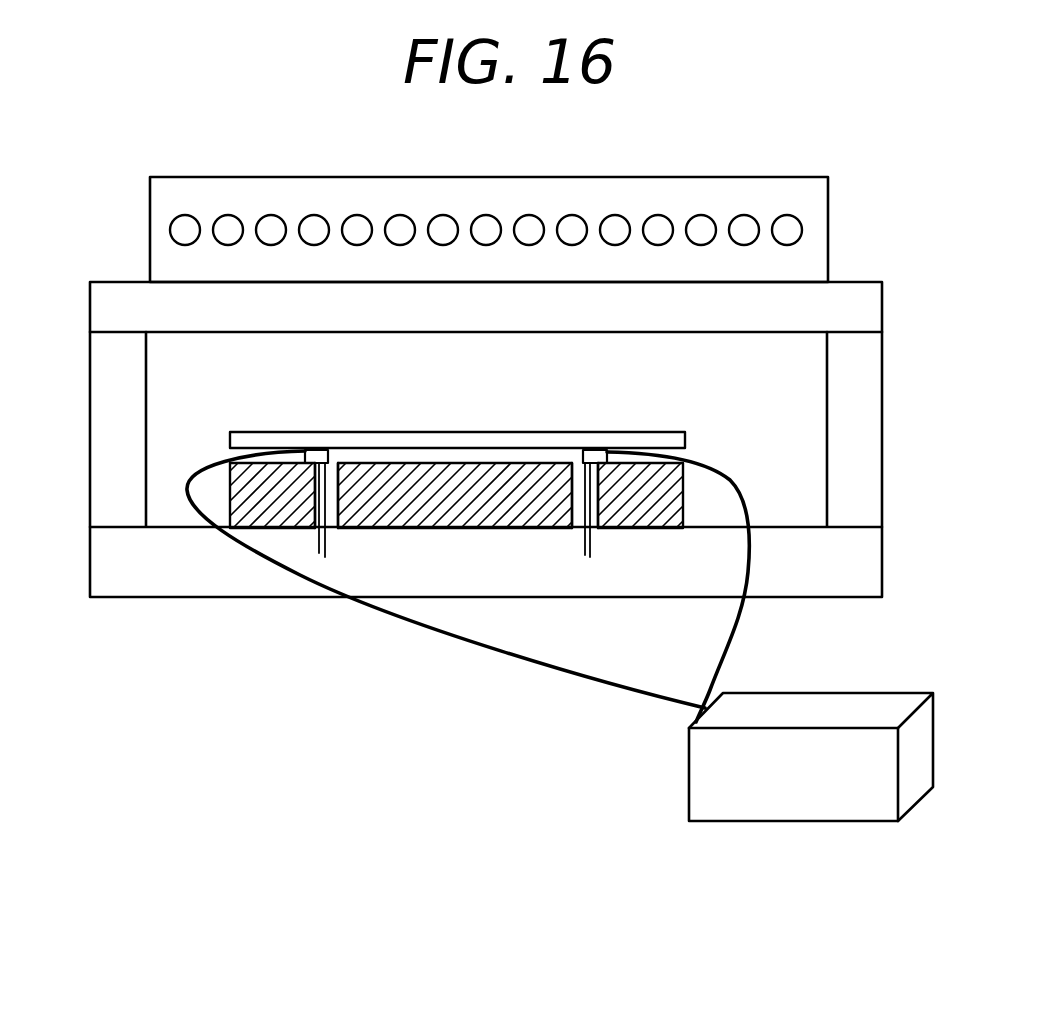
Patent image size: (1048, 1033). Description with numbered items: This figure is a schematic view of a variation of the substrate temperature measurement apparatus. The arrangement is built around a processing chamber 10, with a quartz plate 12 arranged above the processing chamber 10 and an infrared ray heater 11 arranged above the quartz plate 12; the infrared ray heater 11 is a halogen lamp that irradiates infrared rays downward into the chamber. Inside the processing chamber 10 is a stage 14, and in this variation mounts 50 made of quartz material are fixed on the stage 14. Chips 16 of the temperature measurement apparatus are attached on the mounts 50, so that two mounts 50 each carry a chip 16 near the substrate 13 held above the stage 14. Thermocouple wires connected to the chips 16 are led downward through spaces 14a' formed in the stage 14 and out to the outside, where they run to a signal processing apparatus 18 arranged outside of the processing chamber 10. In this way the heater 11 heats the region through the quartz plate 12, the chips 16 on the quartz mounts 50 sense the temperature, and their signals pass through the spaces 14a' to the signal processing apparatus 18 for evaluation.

The processing chamber 10 is at (803, 403).
The infrared ray heater 11 is at (562, 195).
The quartz plate 12 is at (858, 307).
The substrate 13 is at (668, 440).
The stage 14 is at (680, 498).
The spaces 14a' is at (472, 567).
The chip 16 is at (318, 452).
The signal processing apparatus 18 is at (807, 793).
The mount 50 is at (333, 457).